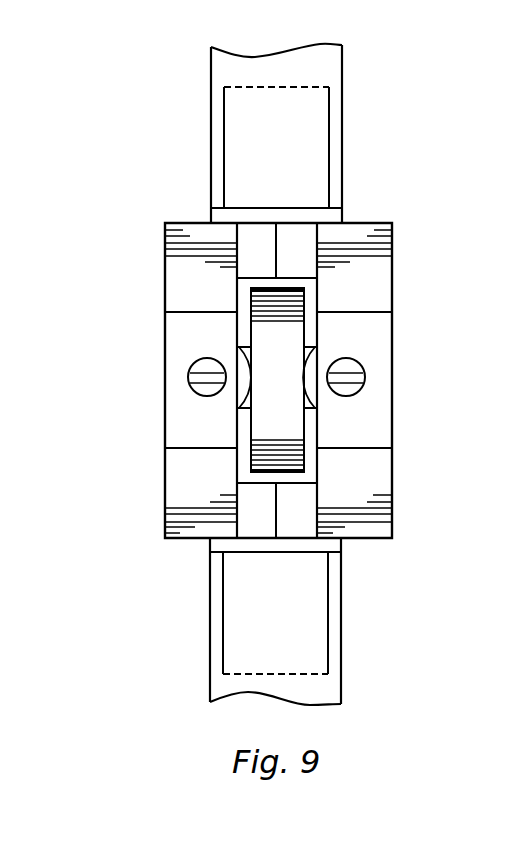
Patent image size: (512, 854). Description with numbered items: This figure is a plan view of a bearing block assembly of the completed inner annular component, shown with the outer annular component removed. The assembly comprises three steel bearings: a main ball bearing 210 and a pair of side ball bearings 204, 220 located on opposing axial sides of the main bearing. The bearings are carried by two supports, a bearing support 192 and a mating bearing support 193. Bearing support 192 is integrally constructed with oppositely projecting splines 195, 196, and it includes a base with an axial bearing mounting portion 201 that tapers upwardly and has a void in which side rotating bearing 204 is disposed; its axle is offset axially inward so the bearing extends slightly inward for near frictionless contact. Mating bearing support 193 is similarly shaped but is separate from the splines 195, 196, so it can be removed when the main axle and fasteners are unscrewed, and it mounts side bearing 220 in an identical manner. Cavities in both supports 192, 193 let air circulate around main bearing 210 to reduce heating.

The bearing support 192 is at (414, 268).
The mating bearing support 193 is at (141, 268).
The spline 195 is at (300, 140).
The spline 196 is at (307, 609).
The axial bearing mounting portion 201 is at (182, 486).
The side rotating bearing 204 is at (308, 383).
The main ball bearing 210 is at (270, 415).
The side bearing 220 is at (243, 370).